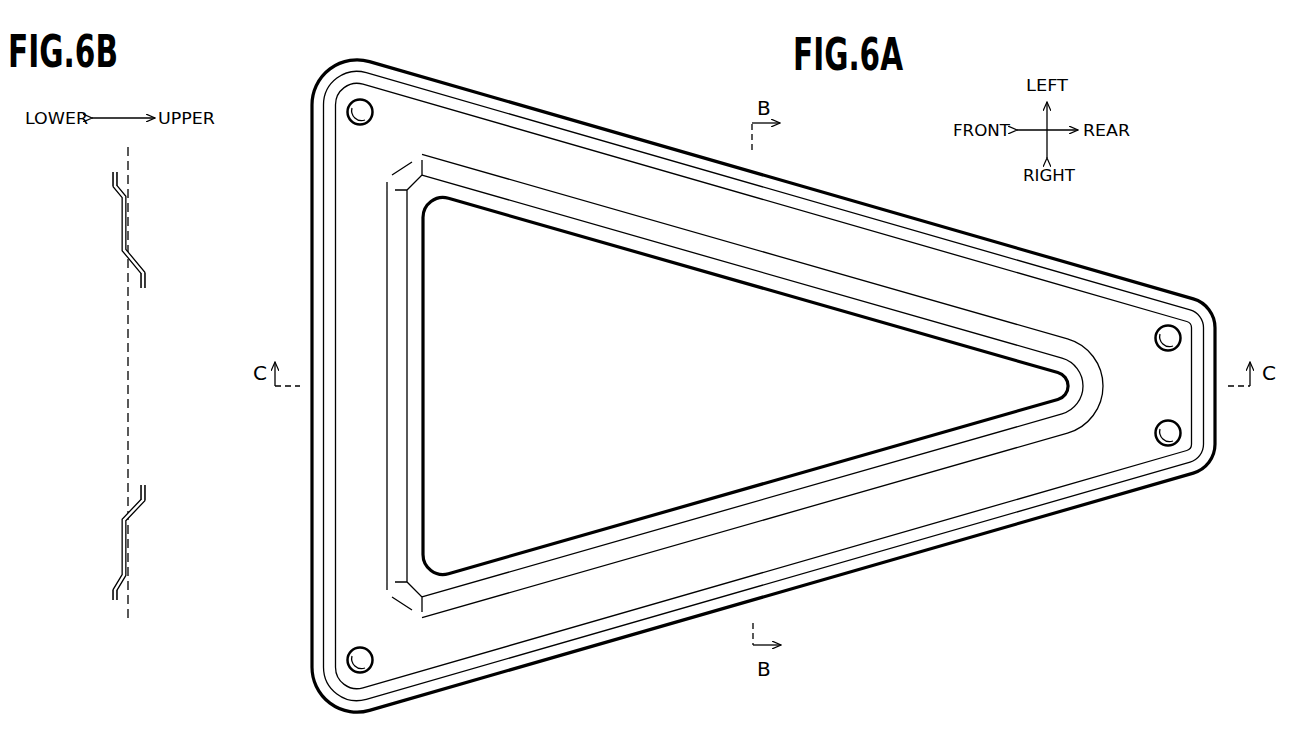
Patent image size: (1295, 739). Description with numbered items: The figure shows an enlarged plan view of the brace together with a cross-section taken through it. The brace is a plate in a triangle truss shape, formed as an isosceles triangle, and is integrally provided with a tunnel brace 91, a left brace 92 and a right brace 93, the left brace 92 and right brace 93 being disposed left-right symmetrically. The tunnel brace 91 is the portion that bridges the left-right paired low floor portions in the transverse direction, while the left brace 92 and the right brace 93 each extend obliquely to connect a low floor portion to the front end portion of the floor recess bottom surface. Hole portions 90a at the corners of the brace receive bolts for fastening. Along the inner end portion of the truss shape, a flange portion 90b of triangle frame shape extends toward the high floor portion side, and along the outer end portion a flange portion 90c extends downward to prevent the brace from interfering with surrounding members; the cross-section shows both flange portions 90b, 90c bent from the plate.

In FIG. 6A, the hole portions 90a is at (351, 104).
In FIG. 6A, the flange portion 90b is at (855, 464).
In FIG. 6B, the flange portion 90b is at (148, 280).
In FIG. 6A, the flange portion 90c is at (858, 568).
In FIG. 6B, the flange portion 90c is at (112, 178).
In FIG. 6A, the tunnel brace 91 is at (363, 275).
In FIG. 6A, the left brace 92 is at (678, 205).
In FIG. 6B, the left brace 92 is at (130, 222).
In FIG. 6A, the right brace 93 is at (678, 570).
In FIG. 6B, the right brace 93 is at (130, 551).